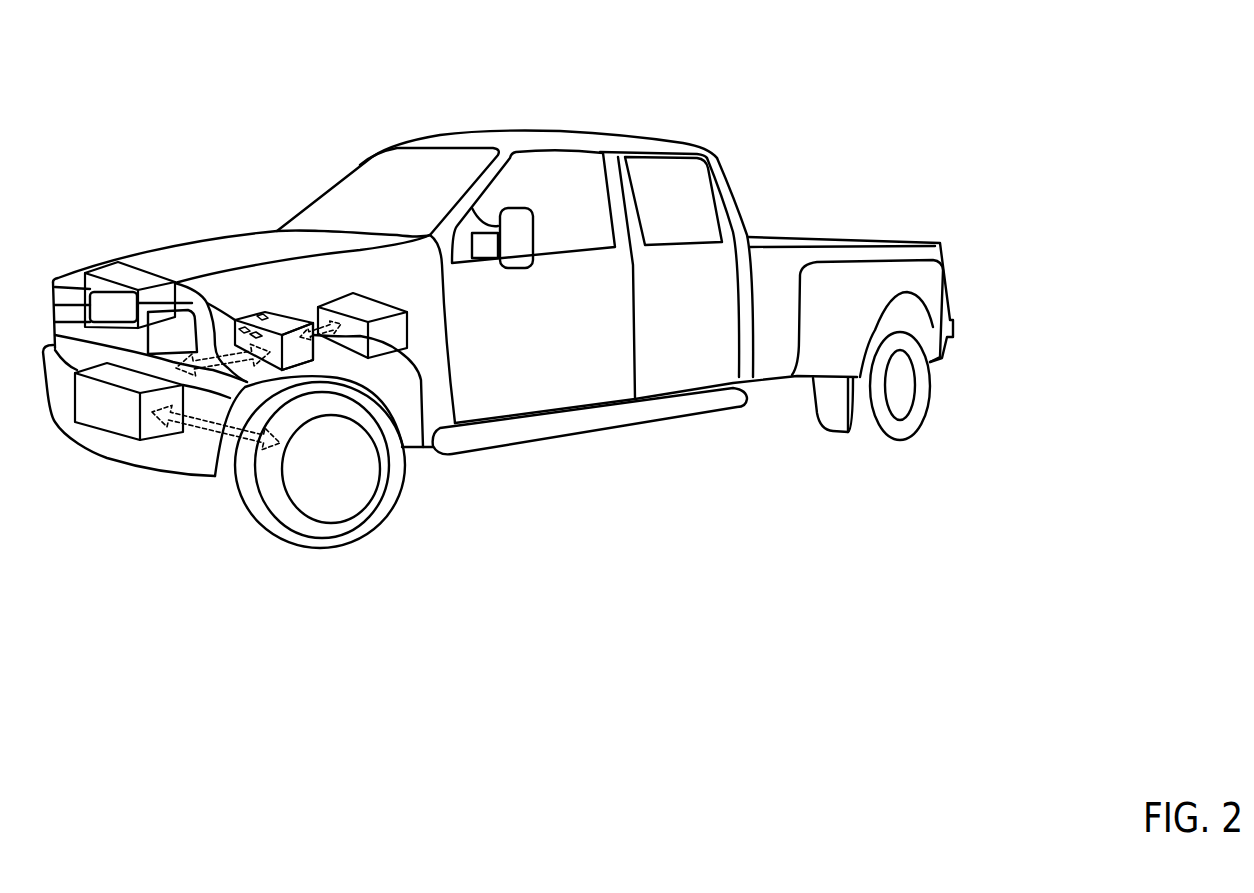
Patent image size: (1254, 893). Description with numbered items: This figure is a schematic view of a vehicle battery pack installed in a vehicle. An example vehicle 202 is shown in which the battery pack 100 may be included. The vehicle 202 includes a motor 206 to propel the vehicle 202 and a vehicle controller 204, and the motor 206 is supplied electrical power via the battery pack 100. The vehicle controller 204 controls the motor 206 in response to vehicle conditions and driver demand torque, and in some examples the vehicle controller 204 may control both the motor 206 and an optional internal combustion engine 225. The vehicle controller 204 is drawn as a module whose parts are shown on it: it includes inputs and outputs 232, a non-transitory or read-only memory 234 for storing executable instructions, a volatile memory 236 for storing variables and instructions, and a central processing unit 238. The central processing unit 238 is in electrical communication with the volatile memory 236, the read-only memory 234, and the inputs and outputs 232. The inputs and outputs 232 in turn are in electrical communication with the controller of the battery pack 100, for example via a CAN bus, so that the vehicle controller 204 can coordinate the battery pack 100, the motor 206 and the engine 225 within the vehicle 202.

The battery pack 100 is at (347, 293).
The vehicle 202 is at (330, 189).
The vehicle controller 204 is at (250, 315).
The motor 206 is at (140, 438).
The internal combustion engine 225 is at (92, 273).
The inputs and outputs 232 is at (232, 317).
The read-only memory 234 is at (242, 316).
The volatile memory 236 is at (292, 322).
The central processing unit 238 is at (263, 313).